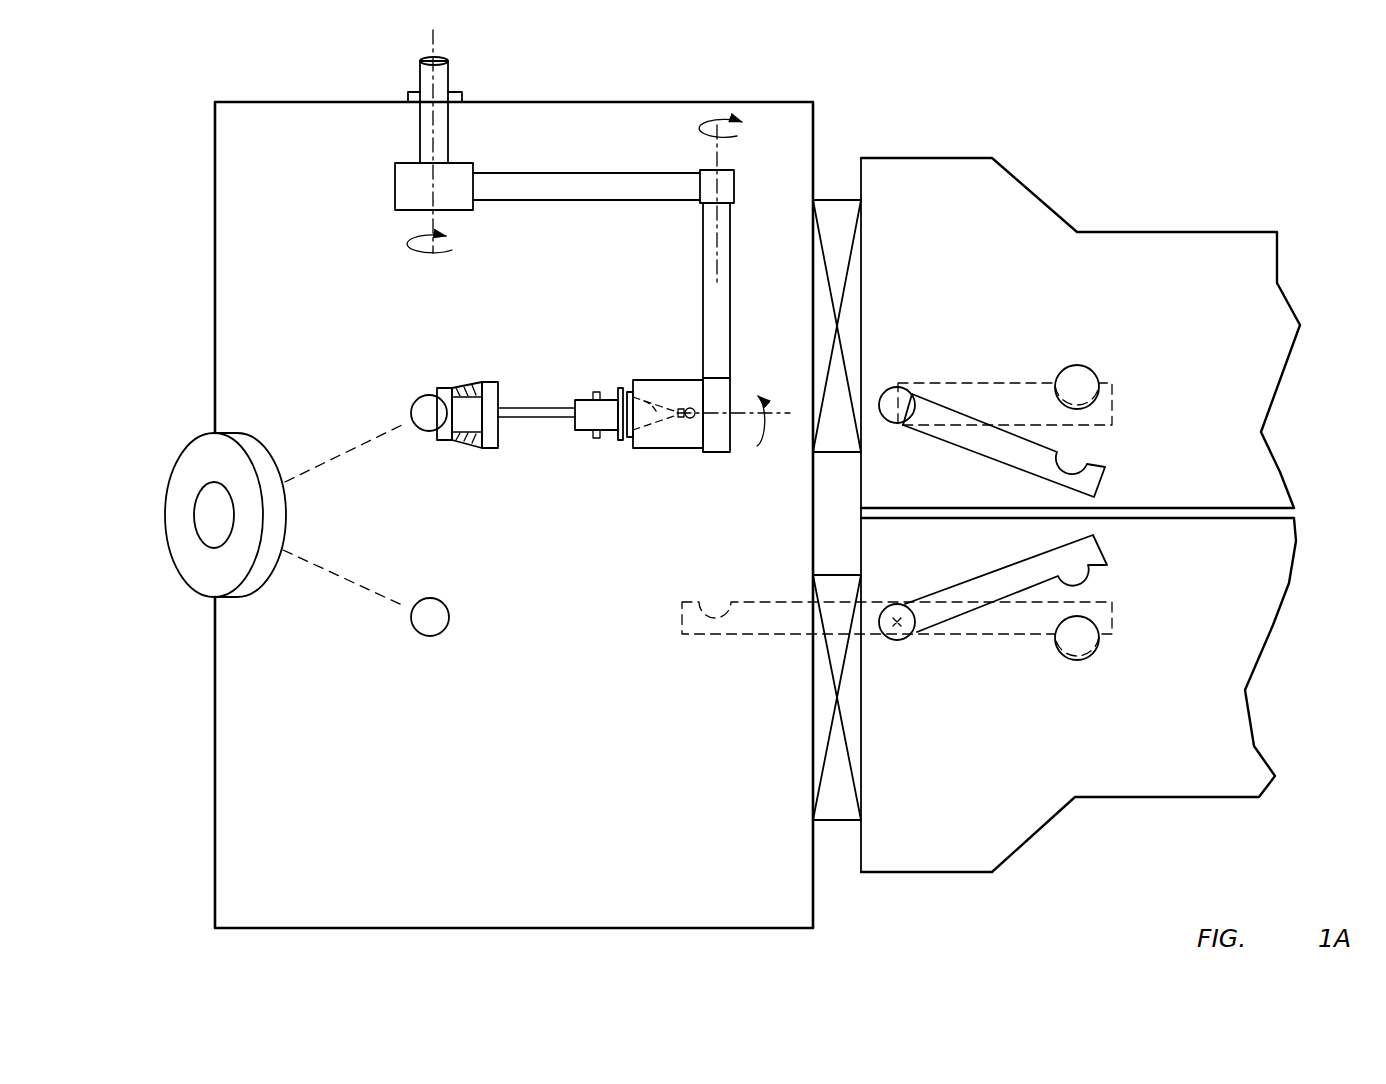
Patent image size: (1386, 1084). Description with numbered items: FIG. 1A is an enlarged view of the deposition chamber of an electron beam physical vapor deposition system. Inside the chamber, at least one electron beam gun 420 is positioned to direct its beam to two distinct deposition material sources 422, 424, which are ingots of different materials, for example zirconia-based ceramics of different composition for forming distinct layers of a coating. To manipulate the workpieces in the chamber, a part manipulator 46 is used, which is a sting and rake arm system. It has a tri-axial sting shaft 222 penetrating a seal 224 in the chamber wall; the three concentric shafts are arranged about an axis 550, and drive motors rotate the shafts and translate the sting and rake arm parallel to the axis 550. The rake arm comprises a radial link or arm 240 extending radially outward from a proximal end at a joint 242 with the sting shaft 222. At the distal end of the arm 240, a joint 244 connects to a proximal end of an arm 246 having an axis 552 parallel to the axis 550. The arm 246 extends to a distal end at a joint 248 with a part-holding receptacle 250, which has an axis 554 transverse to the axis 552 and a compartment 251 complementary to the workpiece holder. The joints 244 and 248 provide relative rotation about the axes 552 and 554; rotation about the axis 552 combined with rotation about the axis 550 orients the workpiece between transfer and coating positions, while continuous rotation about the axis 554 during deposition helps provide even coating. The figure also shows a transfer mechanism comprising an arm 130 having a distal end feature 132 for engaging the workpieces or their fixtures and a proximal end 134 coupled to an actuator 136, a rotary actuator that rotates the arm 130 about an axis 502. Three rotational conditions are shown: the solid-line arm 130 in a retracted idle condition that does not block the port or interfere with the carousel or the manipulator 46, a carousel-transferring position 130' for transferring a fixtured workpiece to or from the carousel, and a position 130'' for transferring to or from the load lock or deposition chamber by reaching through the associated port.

The part manipulator 46 is at (755, 160).
The arm 130 is at (1005, 416).
The arm in carousel-transferring position 130' is at (1006, 637).
The arm in load lock/deposition chamber transferring position 130'' is at (897, 672).
The distal end feature 132 is at (1074, 458).
The proximal end 134 is at (891, 435).
The actuator 136 is at (892, 398).
The tri-axial sting shaft 222 is at (418, 123).
The seal 224 is at (456, 92).
The radial link or arm 240 is at (535, 203).
The joint 242 is at (402, 206).
The joint 244 is at (748, 190).
The arm 246 is at (724, 307).
The joint 248 is at (714, 444).
The part-holding receptacle 250 is at (645, 450).
The compartment 251 is at (633, 390).
The electron beam gun 420 is at (164, 596).
The deposition material source 422 is at (422, 408).
The deposition material source 424 is at (434, 616).
The axis 502 is at (899, 630).
The axis 550 is at (430, 34).
The axis 552 is at (712, 150).
The axis 554 is at (780, 395).